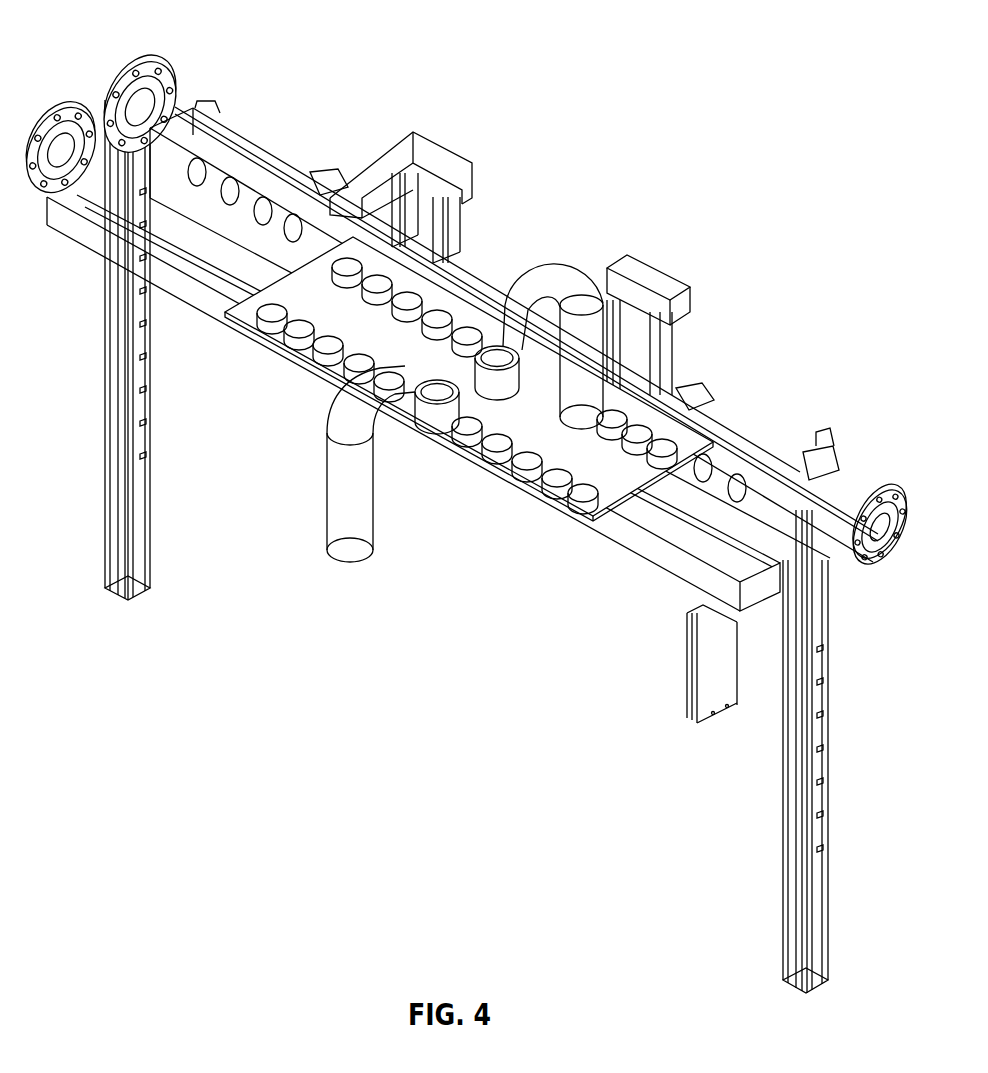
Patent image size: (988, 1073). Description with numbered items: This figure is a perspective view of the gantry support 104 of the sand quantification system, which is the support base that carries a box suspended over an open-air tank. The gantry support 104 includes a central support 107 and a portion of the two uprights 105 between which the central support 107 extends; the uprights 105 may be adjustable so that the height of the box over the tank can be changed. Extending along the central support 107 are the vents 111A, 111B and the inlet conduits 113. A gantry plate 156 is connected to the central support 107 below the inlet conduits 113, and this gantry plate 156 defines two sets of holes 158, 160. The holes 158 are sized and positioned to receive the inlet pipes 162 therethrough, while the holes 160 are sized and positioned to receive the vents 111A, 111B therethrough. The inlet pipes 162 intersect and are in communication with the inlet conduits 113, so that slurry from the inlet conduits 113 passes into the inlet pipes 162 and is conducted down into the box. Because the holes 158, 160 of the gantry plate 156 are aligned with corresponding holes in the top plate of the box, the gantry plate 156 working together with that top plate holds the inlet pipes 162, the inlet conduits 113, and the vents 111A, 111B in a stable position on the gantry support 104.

The support base 104 is at (450, 412).
The uprights 105 is at (500, 546).
The central support 107 is at (526, 324).
The vent 111A is at (553, 315).
The vent 111B is at (331, 464).
The inlet conduits 113 is at (465, 286).
The gantry plate 156 is at (469, 407).
The holes 158 is at (504, 370).
The holes 160 is at (521, 476).
The inlet pipes 162 is at (300, 353).